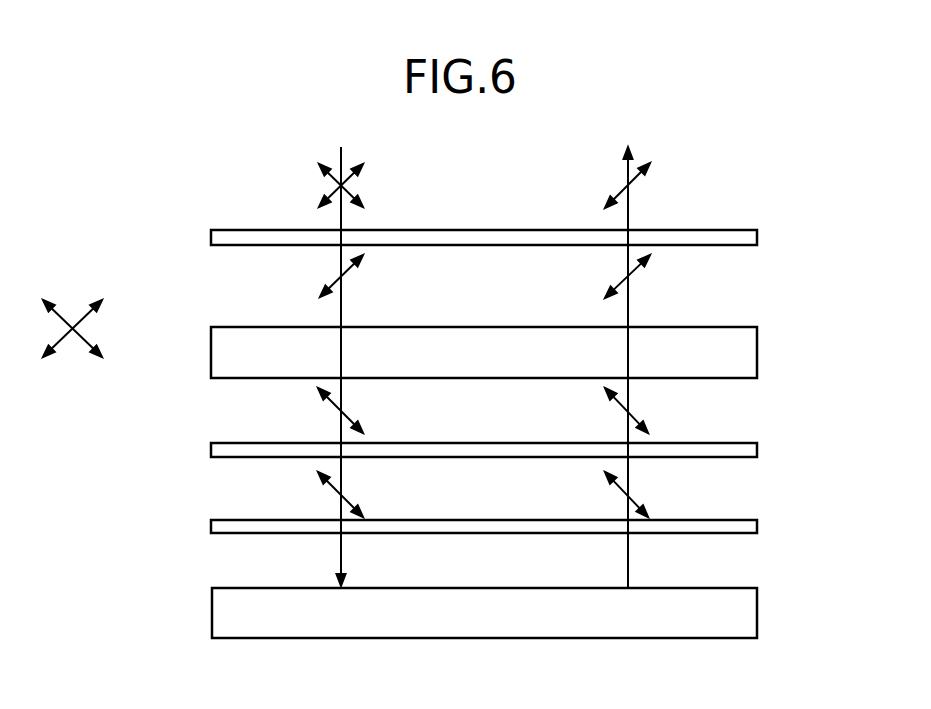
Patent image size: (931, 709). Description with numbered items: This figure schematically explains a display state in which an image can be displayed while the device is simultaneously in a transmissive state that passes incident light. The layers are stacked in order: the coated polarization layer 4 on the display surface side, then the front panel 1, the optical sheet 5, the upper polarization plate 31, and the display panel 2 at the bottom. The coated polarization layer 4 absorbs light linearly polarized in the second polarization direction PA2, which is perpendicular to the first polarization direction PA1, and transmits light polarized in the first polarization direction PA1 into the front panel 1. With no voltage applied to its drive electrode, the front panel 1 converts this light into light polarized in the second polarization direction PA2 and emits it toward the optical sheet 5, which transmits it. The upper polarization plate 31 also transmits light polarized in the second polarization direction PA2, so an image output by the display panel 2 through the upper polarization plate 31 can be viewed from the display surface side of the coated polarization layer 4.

The front panel 1 is at (758, 352).
The display panel 2 is at (758, 618).
The coated polarization layer 4 is at (758, 238).
The optical sheet 5 is at (758, 450).
The upper polarization plate 31 is at (758, 525).
The first polarization direction PA1 is at (85, 317).
The second polarization direction PA2 is at (68, 316).